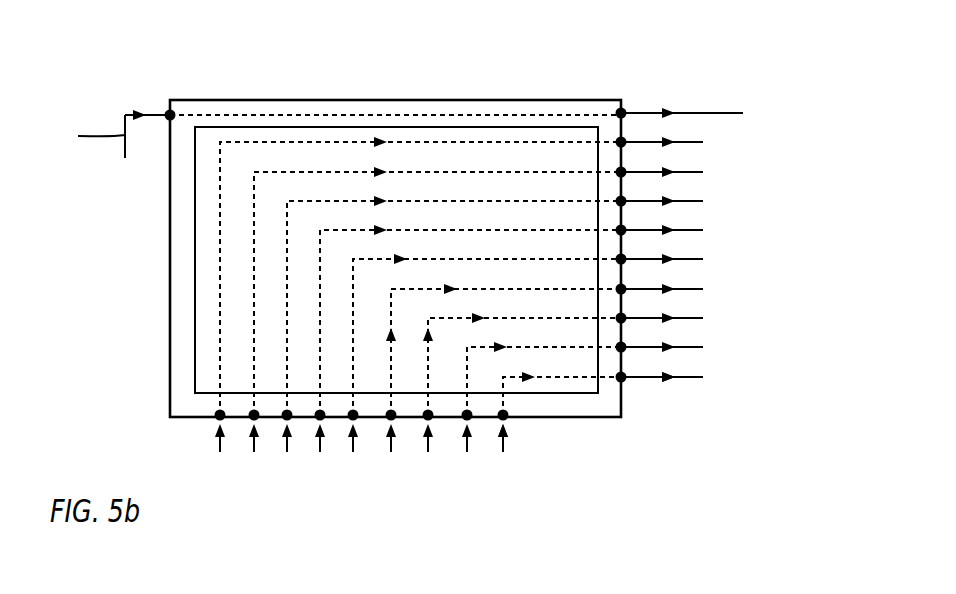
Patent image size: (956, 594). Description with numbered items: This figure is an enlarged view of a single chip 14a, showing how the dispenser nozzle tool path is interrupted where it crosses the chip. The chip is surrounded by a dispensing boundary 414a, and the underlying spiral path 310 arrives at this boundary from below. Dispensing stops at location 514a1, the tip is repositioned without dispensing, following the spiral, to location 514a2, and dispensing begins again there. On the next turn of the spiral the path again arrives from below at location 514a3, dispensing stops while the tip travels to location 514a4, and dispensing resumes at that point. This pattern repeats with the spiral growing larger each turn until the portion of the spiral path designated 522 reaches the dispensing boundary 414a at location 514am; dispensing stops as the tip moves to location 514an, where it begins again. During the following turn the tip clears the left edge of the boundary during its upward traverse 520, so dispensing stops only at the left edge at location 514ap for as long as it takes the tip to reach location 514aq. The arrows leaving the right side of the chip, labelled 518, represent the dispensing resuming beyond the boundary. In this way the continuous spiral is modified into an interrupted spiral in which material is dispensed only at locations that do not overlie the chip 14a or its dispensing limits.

The chip 14a is at (423, 127).
The dispensing boundary 414a is at (504, 99).
The location 514ap is at (168, 116).
The location 514aq is at (618, 111).
The location 514an is at (623, 140).
The location 514a4 is at (628, 350).
The location 514a2 is at (622, 378).
The location 514a1 is at (498, 418).
The location 514a3 is at (462, 418).
The location 514am is at (222, 418).
The output signal lines 518 is at (645, 113).
The upward traverse 520 is at (105, 134).
The portion of the spiral path 522 is at (218, 446).
The path 310 is at (648, 378).